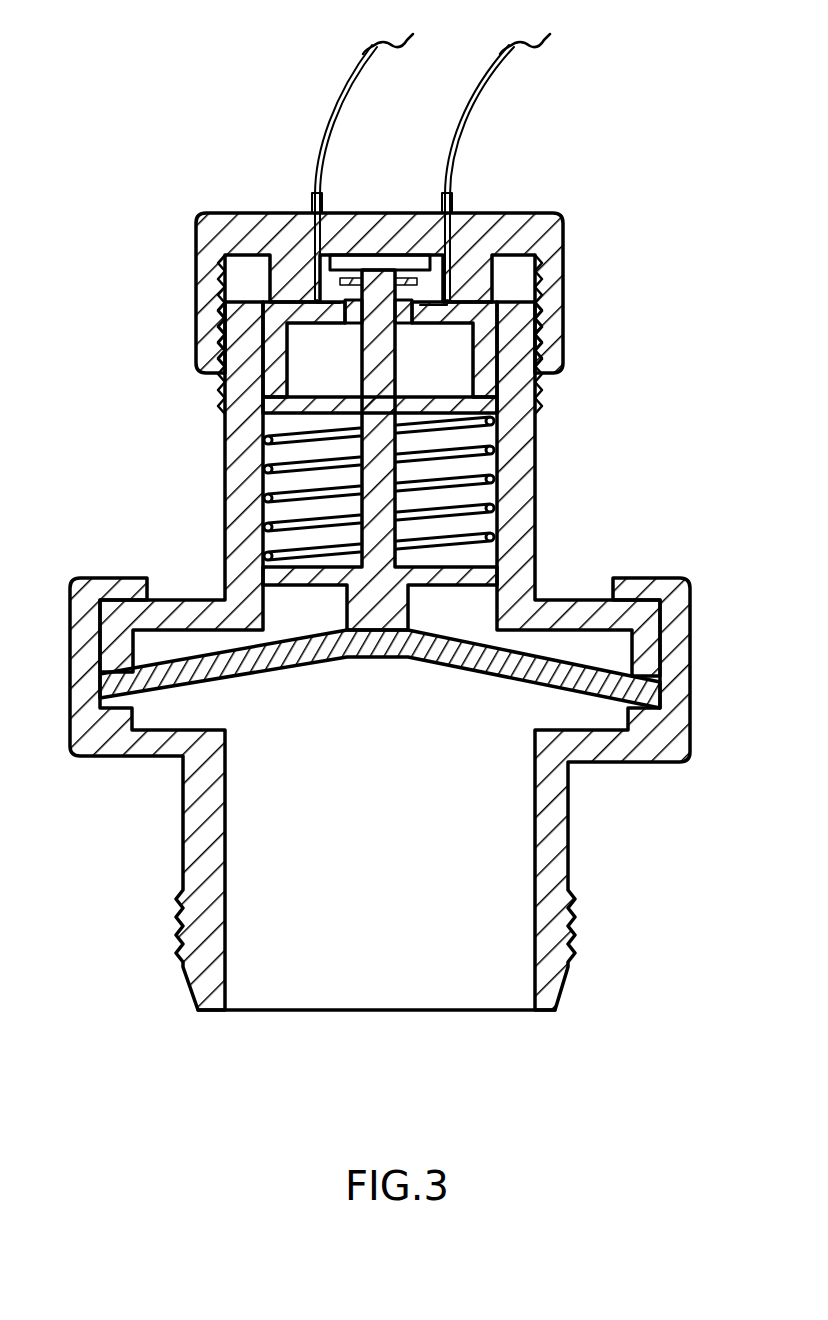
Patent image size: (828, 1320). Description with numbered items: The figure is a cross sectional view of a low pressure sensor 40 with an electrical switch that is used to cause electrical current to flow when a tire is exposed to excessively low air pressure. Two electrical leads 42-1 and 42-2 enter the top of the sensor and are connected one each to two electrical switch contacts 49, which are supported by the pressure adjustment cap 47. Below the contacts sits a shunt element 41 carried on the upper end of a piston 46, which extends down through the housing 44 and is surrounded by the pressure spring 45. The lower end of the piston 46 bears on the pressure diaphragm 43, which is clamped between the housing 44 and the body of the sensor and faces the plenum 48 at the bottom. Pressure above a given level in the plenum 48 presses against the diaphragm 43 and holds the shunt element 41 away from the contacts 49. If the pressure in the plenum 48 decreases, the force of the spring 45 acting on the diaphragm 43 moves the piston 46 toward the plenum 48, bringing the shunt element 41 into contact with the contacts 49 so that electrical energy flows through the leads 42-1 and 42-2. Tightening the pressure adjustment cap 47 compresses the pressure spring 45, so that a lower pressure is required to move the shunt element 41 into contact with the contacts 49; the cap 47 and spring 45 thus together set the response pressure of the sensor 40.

The low pressure sensor 40 is at (580, 936).
The shunt element 41 is at (432, 304).
The electrical lead 42-1 is at (473, 115).
The electrical lead 42-2 is at (332, 110).
The pressure diaphragm 43 is at (507, 685).
The housing 44 is at (533, 540).
The pressure spring 45 is at (490, 478).
The piston 46 is at (360, 622).
The pressure adjustment cap 47 is at (565, 237).
The plenum 48 is at (295, 940).
The electrical switch contacts 49 is at (352, 300).